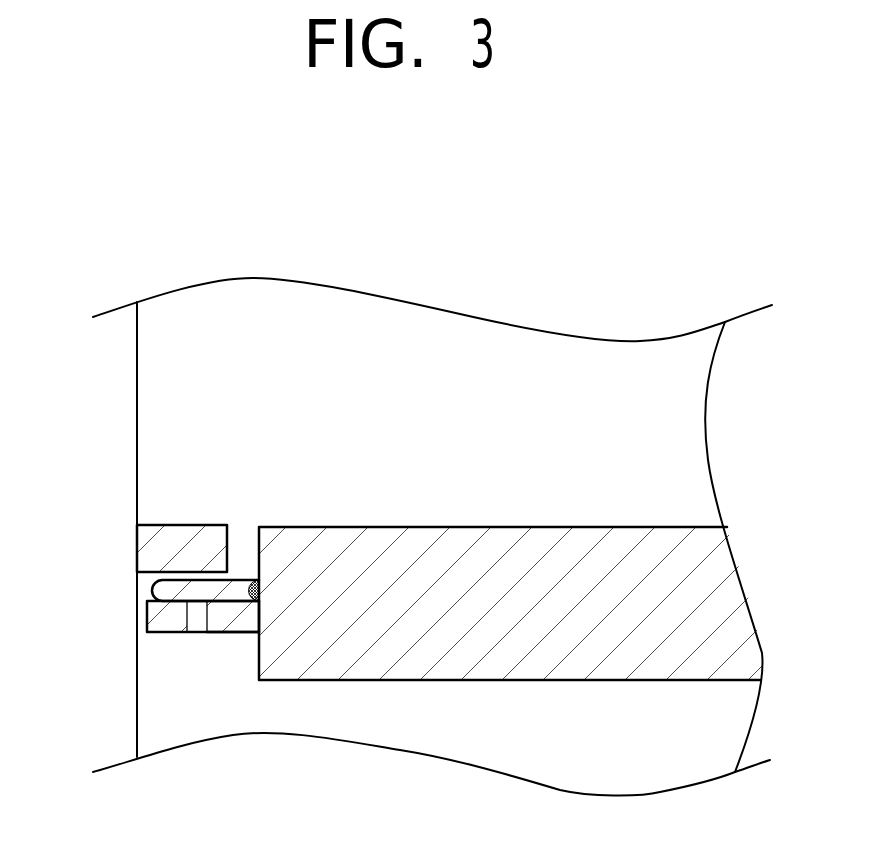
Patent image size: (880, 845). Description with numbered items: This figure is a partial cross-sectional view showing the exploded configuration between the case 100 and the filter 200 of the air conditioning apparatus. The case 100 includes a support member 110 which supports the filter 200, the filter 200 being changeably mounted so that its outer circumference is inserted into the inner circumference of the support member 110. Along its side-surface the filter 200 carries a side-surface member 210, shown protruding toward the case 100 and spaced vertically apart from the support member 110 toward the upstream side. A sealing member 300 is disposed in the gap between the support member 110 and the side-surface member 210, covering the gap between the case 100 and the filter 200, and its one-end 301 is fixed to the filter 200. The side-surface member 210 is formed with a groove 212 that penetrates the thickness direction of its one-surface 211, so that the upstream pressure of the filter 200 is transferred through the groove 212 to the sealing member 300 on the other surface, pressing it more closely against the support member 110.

The case 100 is at (130, 460).
The support member 110 is at (153, 548).
The filter 200 is at (587, 552).
The side-surface member 210 is at (231, 616).
The one-surface 211 is at (219, 645).
The groove 212 is at (188, 640).
The sealing member 300 is at (155, 588).
The one-end 301 is at (256, 586).